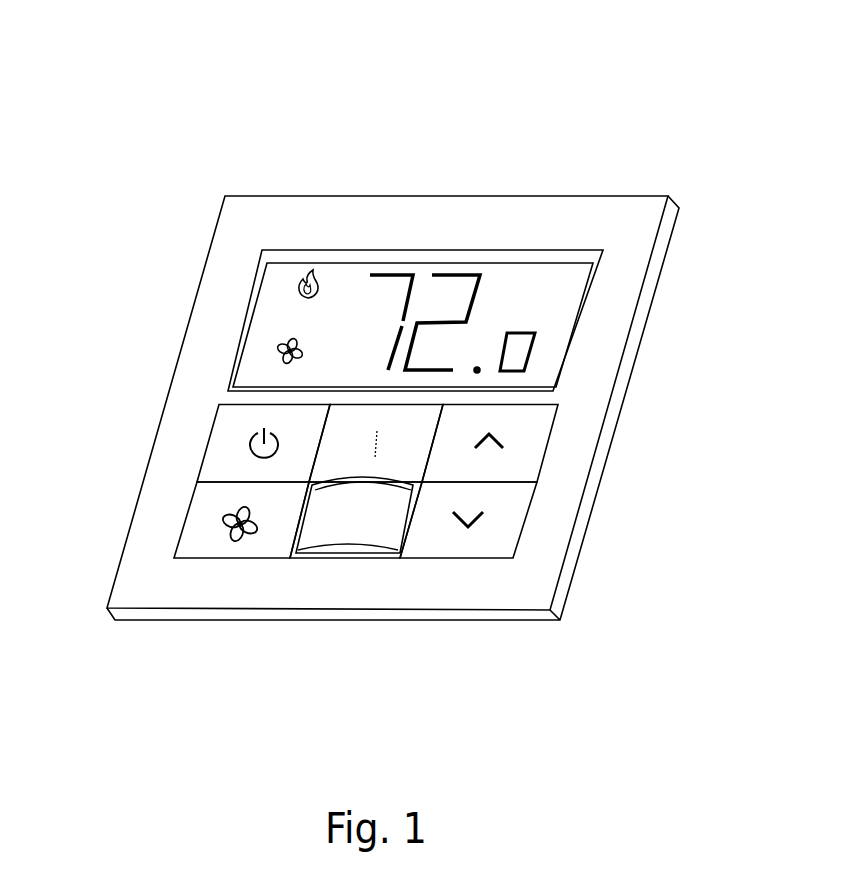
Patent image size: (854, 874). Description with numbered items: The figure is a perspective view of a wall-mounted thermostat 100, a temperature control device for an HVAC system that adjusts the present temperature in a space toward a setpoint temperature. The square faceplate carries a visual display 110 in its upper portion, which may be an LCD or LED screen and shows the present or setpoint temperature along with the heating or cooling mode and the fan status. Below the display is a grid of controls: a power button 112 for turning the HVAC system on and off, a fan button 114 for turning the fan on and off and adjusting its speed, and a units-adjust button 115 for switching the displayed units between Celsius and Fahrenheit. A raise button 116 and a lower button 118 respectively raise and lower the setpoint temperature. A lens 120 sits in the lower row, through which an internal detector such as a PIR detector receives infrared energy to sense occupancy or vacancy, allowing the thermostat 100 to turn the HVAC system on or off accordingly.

The thermostat 100 is at (445, 129).
The visual display 110 is at (283, 323).
The power button 112 is at (235, 450).
The fan button 114 is at (207, 508).
The units-adjust button 115 is at (413, 460).
The raise button 116 is at (525, 443).
The lower button 118 is at (485, 533).
The lens 120 is at (358, 517).